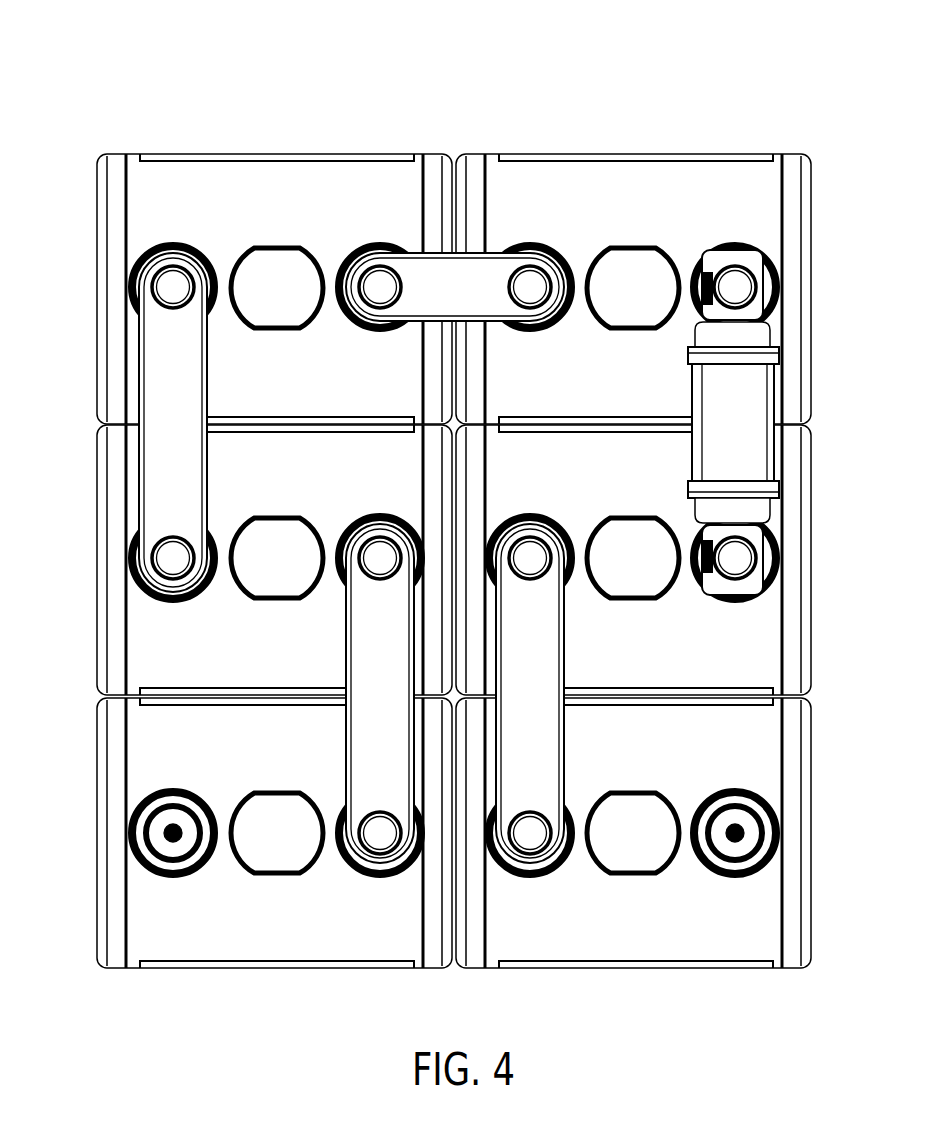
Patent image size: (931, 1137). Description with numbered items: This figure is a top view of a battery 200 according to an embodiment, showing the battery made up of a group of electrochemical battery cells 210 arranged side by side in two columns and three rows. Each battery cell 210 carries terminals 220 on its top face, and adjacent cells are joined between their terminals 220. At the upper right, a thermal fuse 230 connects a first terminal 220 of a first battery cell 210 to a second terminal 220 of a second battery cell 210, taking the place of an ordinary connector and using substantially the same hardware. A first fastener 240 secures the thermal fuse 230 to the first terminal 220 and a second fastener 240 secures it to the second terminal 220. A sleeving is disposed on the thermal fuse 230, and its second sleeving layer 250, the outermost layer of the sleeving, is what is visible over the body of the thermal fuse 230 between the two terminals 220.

The battery 200 is at (78, 70).
The electrochemical cell 210 is at (750, 202).
The terminal 220 is at (770, 283).
The thermal fuse 230 is at (758, 573).
The fastener 240 is at (733, 560).
The second sleeving layer 250 is at (740, 412).